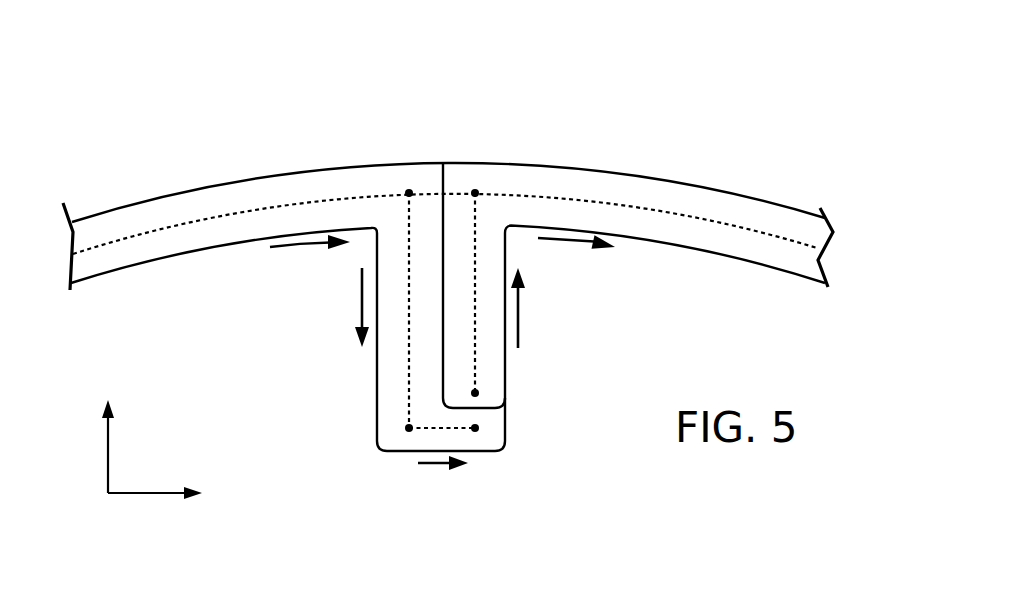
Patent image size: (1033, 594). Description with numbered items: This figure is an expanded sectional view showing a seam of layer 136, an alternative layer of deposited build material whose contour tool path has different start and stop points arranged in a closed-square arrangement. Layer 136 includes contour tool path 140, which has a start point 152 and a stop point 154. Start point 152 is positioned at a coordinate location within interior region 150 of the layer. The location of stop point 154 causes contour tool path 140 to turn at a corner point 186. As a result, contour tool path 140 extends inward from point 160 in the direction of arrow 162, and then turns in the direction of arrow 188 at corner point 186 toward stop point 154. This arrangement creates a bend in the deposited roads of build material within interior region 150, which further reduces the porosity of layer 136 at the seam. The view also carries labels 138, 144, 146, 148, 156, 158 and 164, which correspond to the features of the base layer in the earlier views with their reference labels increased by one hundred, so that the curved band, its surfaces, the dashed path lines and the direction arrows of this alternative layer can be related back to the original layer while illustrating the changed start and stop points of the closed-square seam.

The layer 136 is at (676, 36).
The flange 138 is at (604, 158).
The contour tool path 140 is at (176, 224).
The fiber direction in flange 144 is at (307, 248).
The outer flange surface 146 is at (723, 191).
The inner flange surface 148 is at (768, 266).
The interior region 150 is at (334, 554).
The start point 152 is at (480, 393).
The stop point 154 is at (480, 428).
The fiber direction up the web 156 is at (519, 318).
The right web ply midline 158 is at (475, 190).
The point 160 is at (409, 190).
The arrow 162 is at (360, 288).
The web 164 is at (438, 150).
The corner point 186 is at (405, 428).
The arrow 188 is at (437, 467).